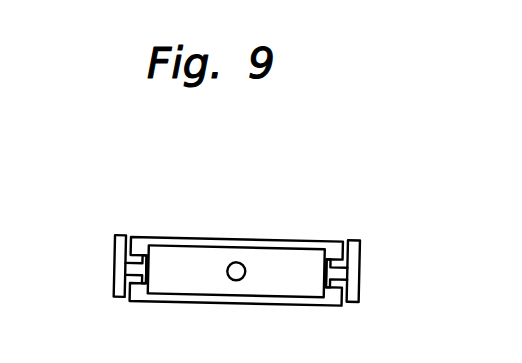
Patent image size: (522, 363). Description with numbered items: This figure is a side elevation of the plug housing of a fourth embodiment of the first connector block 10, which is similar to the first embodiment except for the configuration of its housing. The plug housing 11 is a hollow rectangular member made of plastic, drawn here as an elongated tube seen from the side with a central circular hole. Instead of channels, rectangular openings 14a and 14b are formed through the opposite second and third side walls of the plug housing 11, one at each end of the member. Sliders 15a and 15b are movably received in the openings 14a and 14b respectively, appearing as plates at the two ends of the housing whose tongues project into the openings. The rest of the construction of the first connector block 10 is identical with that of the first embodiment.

The first connector block 10 is at (280, 217).
The plug housing 11 is at (223, 185).
The rectangular opening 14a is at (161, 185).
The rectangular opening 14b is at (371, 193).
The slider 15a is at (117, 272).
The slider 15b is at (418, 257).